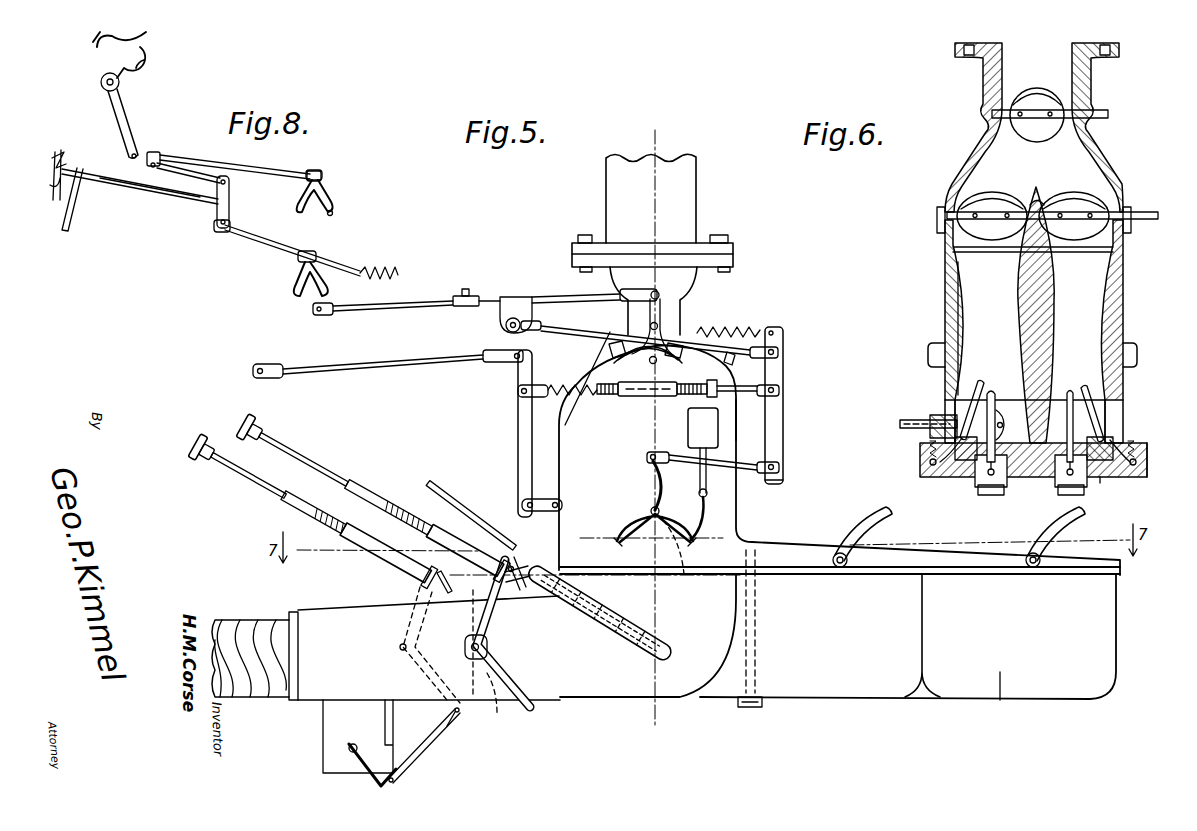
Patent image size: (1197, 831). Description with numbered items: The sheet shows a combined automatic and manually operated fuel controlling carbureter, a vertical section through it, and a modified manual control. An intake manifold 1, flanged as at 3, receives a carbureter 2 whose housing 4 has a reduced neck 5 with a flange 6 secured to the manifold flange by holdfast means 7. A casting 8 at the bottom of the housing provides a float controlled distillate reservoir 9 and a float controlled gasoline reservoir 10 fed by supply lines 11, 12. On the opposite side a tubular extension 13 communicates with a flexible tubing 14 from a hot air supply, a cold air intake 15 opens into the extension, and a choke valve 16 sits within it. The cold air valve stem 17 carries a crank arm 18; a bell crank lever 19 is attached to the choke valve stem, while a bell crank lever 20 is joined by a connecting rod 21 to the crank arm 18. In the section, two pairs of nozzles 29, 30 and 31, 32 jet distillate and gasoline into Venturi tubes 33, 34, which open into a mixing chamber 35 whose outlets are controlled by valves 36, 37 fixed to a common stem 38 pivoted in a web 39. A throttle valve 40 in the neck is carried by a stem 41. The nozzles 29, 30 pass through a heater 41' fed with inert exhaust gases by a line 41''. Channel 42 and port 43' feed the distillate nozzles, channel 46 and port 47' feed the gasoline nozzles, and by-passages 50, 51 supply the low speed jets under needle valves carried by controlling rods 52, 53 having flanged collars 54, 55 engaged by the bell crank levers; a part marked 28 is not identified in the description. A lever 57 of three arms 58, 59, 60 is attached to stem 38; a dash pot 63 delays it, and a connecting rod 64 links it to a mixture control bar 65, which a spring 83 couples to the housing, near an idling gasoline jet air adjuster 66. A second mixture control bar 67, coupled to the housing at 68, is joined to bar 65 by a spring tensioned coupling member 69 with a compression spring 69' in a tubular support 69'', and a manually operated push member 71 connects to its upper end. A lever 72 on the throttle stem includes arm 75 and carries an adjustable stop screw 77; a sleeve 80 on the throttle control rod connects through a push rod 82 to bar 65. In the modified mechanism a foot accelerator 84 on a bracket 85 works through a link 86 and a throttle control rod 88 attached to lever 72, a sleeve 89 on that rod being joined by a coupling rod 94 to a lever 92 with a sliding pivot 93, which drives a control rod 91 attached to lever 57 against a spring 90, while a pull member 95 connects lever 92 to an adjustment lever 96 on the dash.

In FIG. 5, the intake manifold 1 is at (688, 182).
In FIG. 5, the carbureter 2 is at (751, 514).
In FIG. 6, the carbureter 2 is at (1152, 445).
In FIG. 5, the flange 3 is at (733, 250).
In FIG. 5, the housing 4 is at (740, 414).
In FIG. 5, the neck 5 is at (696, 290).
In FIG. 5, the flange 6 is at (765, 270).
In FIG. 5, the holdfast means 7 is at (720, 236).
In FIG. 5, the casting 8 is at (878, 695).
In FIG. 5, the distillate reservoir 9 is at (812, 665).
In FIG. 5, the gasoline reservoir 10 is at (703, 373).
In FIG. 5, the supply line 11 is at (888, 512).
In FIG. 5, the supply line 12 is at (1088, 512).
In FIG. 6, the supply line 12 is at (1111, 500).
In FIG. 5, the tubular extension 13 is at (315, 628).
In FIG. 5, the flexible tubing 14 is at (240, 620).
In FIG. 5, the cold air intake 15 is at (393, 745).
In FIG. 5, the choke valve 16 is at (652, 364).
In FIG. 5, the valve stem 17 is at (348, 749).
In FIG. 5, the crank arm 18 is at (402, 775).
In FIG. 5, the bell crank lever 19 is at (515, 690).
In FIG. 5, the bell crank lever 20 is at (413, 597).
In FIG. 5, the connecting rod 21 is at (450, 728).
In FIG. 6, the valve seat base 28 is at (1035, 478).
In FIG. 6, the nozzle 29 is at (978, 388).
In FIG. 6, the nozzle 30 is at (965, 415).
In FIG. 6, the nozzle 31 is at (1071, 390).
In FIG. 6, the nozzle 32 is at (1095, 410).
In FIG. 6, the Venturi tube 33 is at (965, 305).
In FIG. 6, the Venturi tube 34 is at (1052, 305).
In FIG. 6, the mixing chamber 35 is at (1049, 180).
In FIG. 6, the valve 36 is at (992, 204).
In FIG. 6, the valve 37 is at (1085, 208).
In FIG. 5, the common stem 38 is at (660, 510).
In FIG. 6, the common stem 38 is at (1122, 208).
In FIG. 6, the web 39 is at (955, 245).
In FIG. 6, the throttle valve 40 is at (1023, 98).
In FIG. 5, the stem 41 is at (653, 327).
In FIG. 6, the stem 41 is at (1066, 94).
In FIG. 6, the heater 41' is at (1011, 433).
In FIG. 5, the line 41'' is at (541, 549).
In FIG. 6, the line 41'' is at (907, 439).
In FIG. 6, the channel 42 is at (990, 487).
In FIG. 6, the port 43' is at (948, 475).
In FIG. 6, the channel 46 is at (1068, 487).
In FIG. 6, the port 47' is at (1113, 469).
In FIG. 6, the by-passage 50 is at (928, 464).
In FIG. 6, the by-passage 51 is at (1148, 466).
In FIG. 5, the controlling rod 52 is at (380, 548).
In FIG. 5, the controlling rod 53 is at (455, 530).
In FIG. 5, the flanged collar 54 is at (434, 578).
In FIG. 5, the flanged collar 55 is at (514, 562).
In FIG. 8, the lever 57 is at (295, 268).
In FIG. 5, the lever 57 is at (683, 576).
In FIG. 5, the arm 58 is at (642, 518).
In FIG. 5, the arm 59 is at (702, 520).
In FIG. 5, the arm 60 is at (645, 470).
In FIG. 5, the dash pot 63 is at (688, 420).
In FIG. 5, the connecting rod 64 is at (785, 463).
In FIG. 5, the mixture control bar 65 is at (784, 425).
In FIG. 5, the idling gasoline jet air adjuster 66 is at (785, 355).
In FIG. 5, the mixture control bar 67 is at (518, 412).
In FIG. 5, the coupling 68 is at (532, 500).
In FIG. 5, the spring tensioned coupling member 69 is at (800, 384).
In FIG. 5, the compression spring 69' is at (558, 407).
In FIG. 5, the tubular support 69'' is at (657, 399).
In FIG. 5, the push member 71 is at (402, 358).
In FIG. 8, the lever 72 is at (326, 186).
In FIG. 5, the lever 72 is at (618, 293).
In FIG. 5, the arm 75 is at (662, 298).
In FIG. 5, the adjustable stop screw 77 is at (608, 343).
In FIG. 5, the sleeve 80 is at (533, 311).
In FIG. 5, the push rod 82 is at (610, 338).
In FIG. 5, the spring 83 is at (742, 322).
In FIG. 8, the foot accelerator 84 is at (96, 48).
In FIG. 8, the bracket 85 is at (148, 60).
In FIG. 8, the link 86 is at (126, 110).
In FIG. 8, the throttle control rod 88 is at (189, 160).
In FIG. 8, the sleeve 89 is at (155, 152).
In FIG. 8, the spring 90 is at (366, 272).
In FIG. 8, the control rod 91 is at (78, 210).
In FIG. 8, the lever 92 is at (231, 196).
In FIG. 8, the sliding pivot 93 is at (205, 200).
In FIG. 8, the coupling rod 94 is at (208, 172).
In FIG. 8, the pull member 95 is at (133, 188).
In FIG. 8, the adjustment lever 96 is at (63, 168).